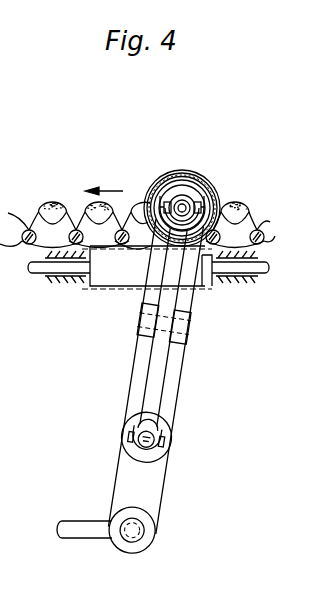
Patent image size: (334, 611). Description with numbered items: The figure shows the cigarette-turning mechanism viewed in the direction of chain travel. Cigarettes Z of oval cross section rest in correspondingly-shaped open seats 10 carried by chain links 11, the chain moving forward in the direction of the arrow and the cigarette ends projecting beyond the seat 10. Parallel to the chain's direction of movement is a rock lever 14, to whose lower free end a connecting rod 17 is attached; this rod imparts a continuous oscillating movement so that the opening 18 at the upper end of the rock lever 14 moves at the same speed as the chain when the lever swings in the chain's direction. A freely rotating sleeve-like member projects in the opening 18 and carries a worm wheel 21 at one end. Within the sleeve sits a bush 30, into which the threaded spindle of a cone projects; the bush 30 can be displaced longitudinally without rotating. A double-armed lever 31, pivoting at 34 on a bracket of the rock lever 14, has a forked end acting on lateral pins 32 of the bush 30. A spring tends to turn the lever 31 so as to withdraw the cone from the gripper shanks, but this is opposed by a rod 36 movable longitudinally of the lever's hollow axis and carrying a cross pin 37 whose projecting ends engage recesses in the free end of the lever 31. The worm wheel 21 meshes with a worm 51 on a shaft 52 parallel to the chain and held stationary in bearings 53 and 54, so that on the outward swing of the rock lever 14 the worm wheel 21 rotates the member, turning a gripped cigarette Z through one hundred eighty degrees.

The open seat 10 is at (42, 213).
The chain link 11 is at (43, 235).
The rock lever 14 is at (140, 368).
The connecting rod 17 is at (110, 531).
The opening 18 is at (199, 186).
The worm wheel 21 is at (171, 185).
The bush 30 is at (183, 200).
The lever 31 is at (158, 372).
The lateral pins 32 is at (166, 204).
The pivot 34 is at (190, 321).
The rod 36 is at (142, 445).
The cross pin 37 is at (132, 437).
The worm 51 is at (123, 280).
The shaft 52 is at (261, 279).
The bearing 53 is at (62, 278).
The bearing 54 is at (242, 278).
The cigarette Z is at (44, 203).